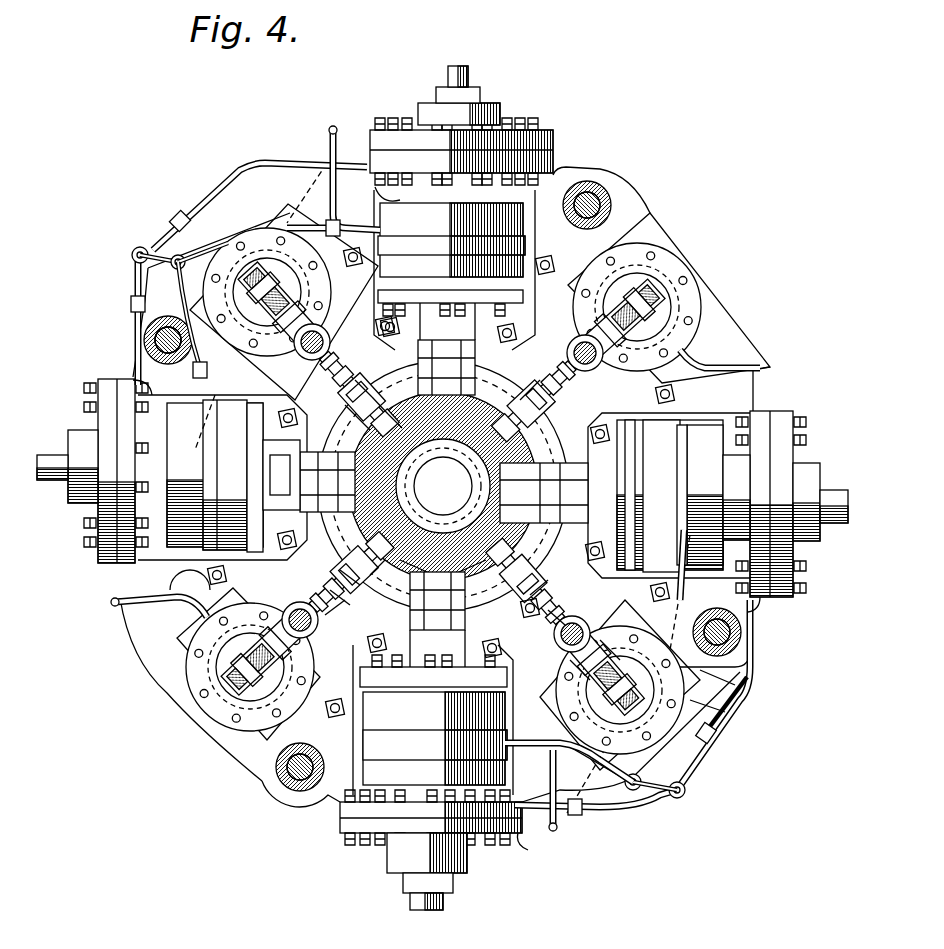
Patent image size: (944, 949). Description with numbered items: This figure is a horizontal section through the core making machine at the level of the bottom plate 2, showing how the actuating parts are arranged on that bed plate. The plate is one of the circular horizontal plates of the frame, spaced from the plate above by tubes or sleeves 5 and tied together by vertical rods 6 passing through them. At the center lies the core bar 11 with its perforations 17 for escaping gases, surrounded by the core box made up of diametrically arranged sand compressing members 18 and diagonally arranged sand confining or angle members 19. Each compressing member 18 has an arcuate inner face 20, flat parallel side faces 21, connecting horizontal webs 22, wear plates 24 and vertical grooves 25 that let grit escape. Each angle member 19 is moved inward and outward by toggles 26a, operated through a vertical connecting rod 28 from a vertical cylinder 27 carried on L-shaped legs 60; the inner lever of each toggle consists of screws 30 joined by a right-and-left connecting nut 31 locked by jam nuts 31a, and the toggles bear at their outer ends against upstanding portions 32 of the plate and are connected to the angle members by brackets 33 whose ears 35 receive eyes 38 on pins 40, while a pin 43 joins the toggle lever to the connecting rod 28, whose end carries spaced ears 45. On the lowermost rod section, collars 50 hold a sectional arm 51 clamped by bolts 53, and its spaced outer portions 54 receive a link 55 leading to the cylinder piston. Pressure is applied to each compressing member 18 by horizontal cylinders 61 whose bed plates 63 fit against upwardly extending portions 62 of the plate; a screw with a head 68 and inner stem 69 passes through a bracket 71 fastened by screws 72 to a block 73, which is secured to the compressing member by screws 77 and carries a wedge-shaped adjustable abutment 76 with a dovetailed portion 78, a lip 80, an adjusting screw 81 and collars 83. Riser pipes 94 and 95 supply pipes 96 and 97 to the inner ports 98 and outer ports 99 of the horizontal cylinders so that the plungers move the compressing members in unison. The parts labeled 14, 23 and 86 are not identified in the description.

The bottom plate 2 is at (150, 628).
The tubes or sleeves 5 is at (155, 350).
The vertical rods 6 is at (144, 338).
The core bar 11 is at (443, 486).
The piston rod 14 is at (345, 590).
The perforations 17 is at (443, 486).
The sand compressing members 18 is at (545, 400).
The sand confining members 19 is at (500, 385).
The arcuate inner faces 20 is at (443, 486).
The flat side faces 21 is at (509, 433).
The horizontal webs 22 is at (443, 570).
The crosshead 23 is at (550, 385).
The wear plates 24 is at (535, 598).
The vertical grooves or channels 25 is at (375, 590).
The toggles 26a is at (555, 588).
The vertical cylinder 27 is at (443, 491).
The vertical connecting rod 28 is at (312, 640).
The screws 30 is at (360, 385).
The connecting nut 31 is at (362, 405).
The jam nuts 31a is at (345, 372).
The upstanding portions 32 is at (705, 322).
The brackets 33 is at (372, 398).
The spaced ears 35 is at (368, 420).
The eyes 38 is at (328, 570).
The pins 40 is at (320, 612).
The pivot or pin 43 is at (325, 325).
The spaced ears 45 is at (295, 585).
The spaced collars 50 is at (572, 664).
The sectional arm 51 is at (600, 645).
The bolts 53 is at (550, 620).
The outer portions 54 is at (700, 700).
The link 55 is at (706, 745).
The legs 60 is at (275, 780).
The horizontal cylinders 61 is at (445, 494).
The upwardly extending portions 62 is at (553, 165).
The bed plates 63 is at (535, 232).
The head 68 is at (665, 496).
The inner portion 69 is at (598, 443).
The bracket 71 is at (450, 503).
The screws 72 is at (288, 530).
The block 73 is at (496, 334).
The adjustable abutment 76 is at (399, 331).
The screws 77 is at (590, 528).
The dove-tailed inner portion 78 is at (481, 644).
The lip or flange 80 is at (293, 429).
The adjusting screw 81 is at (391, 638).
The collars or shoulders 83 is at (391, 624).
The pipe 86 is at (320, 205).
The riser pipe 94 is at (215, 255).
The riser pipes 95 is at (138, 250).
The pipes 96 is at (570, 800).
The pipes 97 is at (253, 163).
The inner ports 98 is at (448, 488).
The outer ports 99 is at (540, 845).